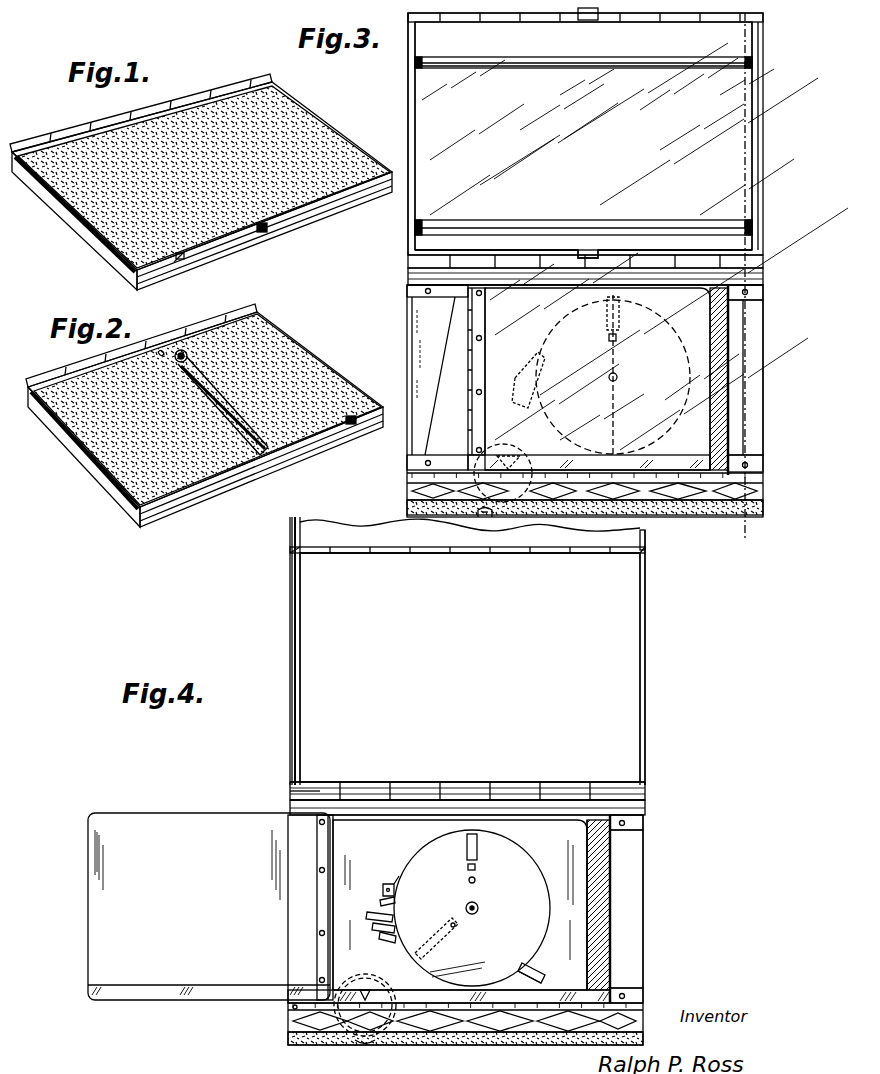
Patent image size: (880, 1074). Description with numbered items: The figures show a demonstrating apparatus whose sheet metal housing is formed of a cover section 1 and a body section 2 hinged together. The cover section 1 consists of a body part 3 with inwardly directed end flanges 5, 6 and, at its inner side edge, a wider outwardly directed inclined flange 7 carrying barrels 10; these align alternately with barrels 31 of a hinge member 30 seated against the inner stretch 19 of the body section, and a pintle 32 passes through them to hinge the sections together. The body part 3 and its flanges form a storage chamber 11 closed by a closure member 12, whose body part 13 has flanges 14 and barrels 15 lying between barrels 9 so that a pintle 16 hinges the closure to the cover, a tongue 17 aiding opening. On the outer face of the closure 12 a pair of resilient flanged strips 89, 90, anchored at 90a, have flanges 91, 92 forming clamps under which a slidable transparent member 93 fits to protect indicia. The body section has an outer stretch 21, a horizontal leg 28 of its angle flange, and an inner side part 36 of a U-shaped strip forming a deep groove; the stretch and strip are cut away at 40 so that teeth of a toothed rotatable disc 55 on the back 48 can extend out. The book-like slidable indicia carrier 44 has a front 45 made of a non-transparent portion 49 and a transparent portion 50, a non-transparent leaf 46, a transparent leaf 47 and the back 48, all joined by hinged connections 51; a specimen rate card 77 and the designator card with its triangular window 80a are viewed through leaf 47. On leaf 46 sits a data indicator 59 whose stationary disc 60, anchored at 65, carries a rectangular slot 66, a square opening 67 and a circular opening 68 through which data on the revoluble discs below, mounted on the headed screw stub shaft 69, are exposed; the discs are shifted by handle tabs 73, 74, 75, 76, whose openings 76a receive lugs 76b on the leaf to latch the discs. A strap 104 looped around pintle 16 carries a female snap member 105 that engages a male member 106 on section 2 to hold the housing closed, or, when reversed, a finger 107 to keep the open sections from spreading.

In FIG. 1, the cover section 1 is at (110, 207).
In FIG. 2, the cover section 1 is at (97, 462).
In FIG. 3, the cover section 1 is at (762, 147).
In FIG. 4, the cover section 1 is at (648, 537).
In FIG. 1, the body section 2 is at (73, 205).
In FIG. 2, the body section 2 is at (112, 480).
In FIG. 3, the body section 2 is at (763, 426).
In FIG. 4, the body part 3 is at (620, 624).
In FIG. 3, the flange 5 is at (408, 100).
In FIG. 4, the flange 5 is at (290, 618).
In FIG. 3, the flange 6 is at (763, 95).
In FIG. 4, the flange 6 is at (650, 645).
In FIG. 3, the inclined flange 7 is at (410, 262).
In FIG. 4, the inclined flange 7 is at (392, 785).
In FIG. 4, the barrels 9 is at (320, 553).
In FIG. 3, the barrels 10 is at (436, 263).
In FIG. 4, the barrels 10 is at (320, 790).
In FIG. 3, the storage chamber 11 is at (748, 13).
In FIG. 4, the storage chamber 11 is at (470, 667).
In FIG. 3, the closure member 12 is at (614, 293).
In FIG. 4, the body part 13 is at (340, 535).
In FIG. 4, the flange 14 is at (292, 532).
In FIG. 4, the barrels 15 is at (293, 553).
In FIG. 1, the pintle 16 is at (62, 138).
In FIG. 2, the pintle 16 is at (57, 377).
In FIG. 3, the pintle 16 is at (638, 21).
In FIG. 3, the tongue 17 is at (593, 252).
In FIG. 3, the inner stretch 19 is at (756, 293).
In FIG. 4, the inner stretch 19 is at (644, 824).
In FIG. 3, the outer stretch 21 is at (758, 463).
In FIG. 4, the outer stretch 21 is at (633, 998).
In FIG. 3, the horizontal leg 28 is at (672, 286).
In FIG. 4, the horizontal leg 28 is at (556, 811).
In FIG. 4, the hinge member 30 is at (647, 808).
In FIG. 3, the barrels 31 is at (418, 280).
In FIG. 4, the barrels 31 is at (290, 797).
In FIG. 1, the pintle 32 is at (215, 240).
In FIG. 2, the pintle 32 is at (173, 497).
In FIG. 3, the inner side part 36 is at (681, 517).
In FIG. 4, the inner side part 36 is at (465, 1020).
In FIG. 1, the cutout 40 is at (181, 257).
In FIG. 2, the cutout 40 is at (352, 416).
In FIG. 3, the cutout 40 is at (486, 509).
In FIG. 4, the cutout 40 is at (370, 1042).
In FIG. 3, the indicia carrier 44 is at (496, 322).
In FIG. 3, the front 45 is at (666, 339).
In FIG. 4, the front 45 is at (108, 857).
In FIG. 4, the leaf 46 is at (592, 832).
In FIG. 3, the leaf 47 is at (746, 380).
In FIG. 4, the leaf 47 is at (602, 976).
In FIG. 3, the back 48 is at (731, 430).
In FIG. 4, the non-transparent portion 49 is at (209, 906).
In FIG. 3, the transparent portion 50 is at (703, 502).
In FIG. 4, the transparent portion 50 is at (158, 993).
In FIG. 3, the hinged connections 51 is at (472, 362).
In FIG. 3, the toothed rotatable disc 55 is at (530, 454).
In FIG. 4, the toothed rotatable disc 55 is at (363, 1040).
In FIG. 4, the data indicator 59 is at (530, 868).
In FIG. 4, the stationary disc 60 is at (510, 852).
In FIG. 4, the anchorage 65 is at (386, 880).
In FIG. 4, the rectangular slot 66 is at (466, 838).
In FIG. 4, the square opening 67 is at (467, 866).
In FIG. 4, the circular opening 68 is at (470, 883).
In FIG. 4, the headed screw stub shaft 69 is at (479, 906).
In FIG. 4, the handle tab 73 is at (536, 968).
In FIG. 4, the handle tab 74 is at (368, 917).
In FIG. 4, the handle tab 75 is at (375, 930).
In FIG. 4, the handle tab 76 is at (389, 940).
In FIG. 4, the openings 76a is at (532, 972).
In FIG. 4, the lugs or pins 76b is at (377, 903).
In FIG. 3, the rate card 77 is at (752, 404).
In FIG. 4, the rate card 77 is at (627, 937).
In FIG. 3, the triangular shaped slot 80a is at (536, 460).
In FIG. 4, the triangular shaped slot 80a is at (325, 1042).
In FIG. 3, the resilient flanged strip 89 is at (445, 58).
In FIG. 3, the resilient flanged strip 90 is at (542, 230).
In FIG. 3, the anchorage 90a is at (508, 60).
In FIG. 3, the flange 91 is at (543, 68).
In FIG. 3, the flange 92 is at (470, 220).
In FIG. 3, the transparent member 93 is at (447, 148).
In FIG. 1, the strap 104 is at (265, 229).
In FIG. 2, the strap 104 is at (187, 360).
In FIG. 3, the strap 104 is at (588, 13).
In FIG. 2, the female member 105 is at (184, 351).
In FIG. 2, the male member 106 is at (158, 354).
In FIG. 1, the finger 107 is at (178, 255).
In FIG. 2, the finger 107 is at (355, 432).
In FIG. 3, the finger 107 is at (478, 508).